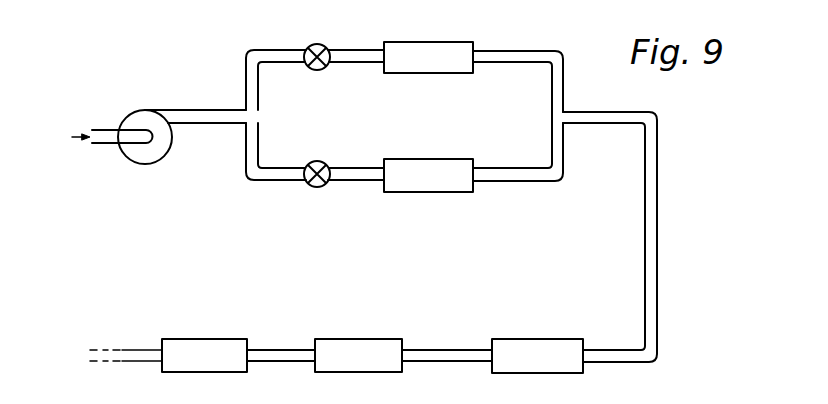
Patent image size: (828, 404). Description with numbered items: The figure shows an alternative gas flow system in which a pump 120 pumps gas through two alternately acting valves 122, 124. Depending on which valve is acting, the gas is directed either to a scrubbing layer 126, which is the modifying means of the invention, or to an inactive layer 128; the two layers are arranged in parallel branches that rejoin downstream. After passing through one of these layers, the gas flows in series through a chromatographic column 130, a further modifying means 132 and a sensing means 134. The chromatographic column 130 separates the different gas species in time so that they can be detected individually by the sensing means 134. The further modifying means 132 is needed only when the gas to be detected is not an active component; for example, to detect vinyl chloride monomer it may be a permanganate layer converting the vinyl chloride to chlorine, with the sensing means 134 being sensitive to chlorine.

The pump 120 is at (149, 118).
The valve 122 is at (332, 20).
The valve 124 is at (317, 188).
The scrubbing layer 126 is at (435, 42).
The inactive layer 128 is at (422, 193).
The chromatographic column 130 is at (562, 318).
The further modifying means 132 is at (355, 339).
The sensing means 134 is at (168, 339).